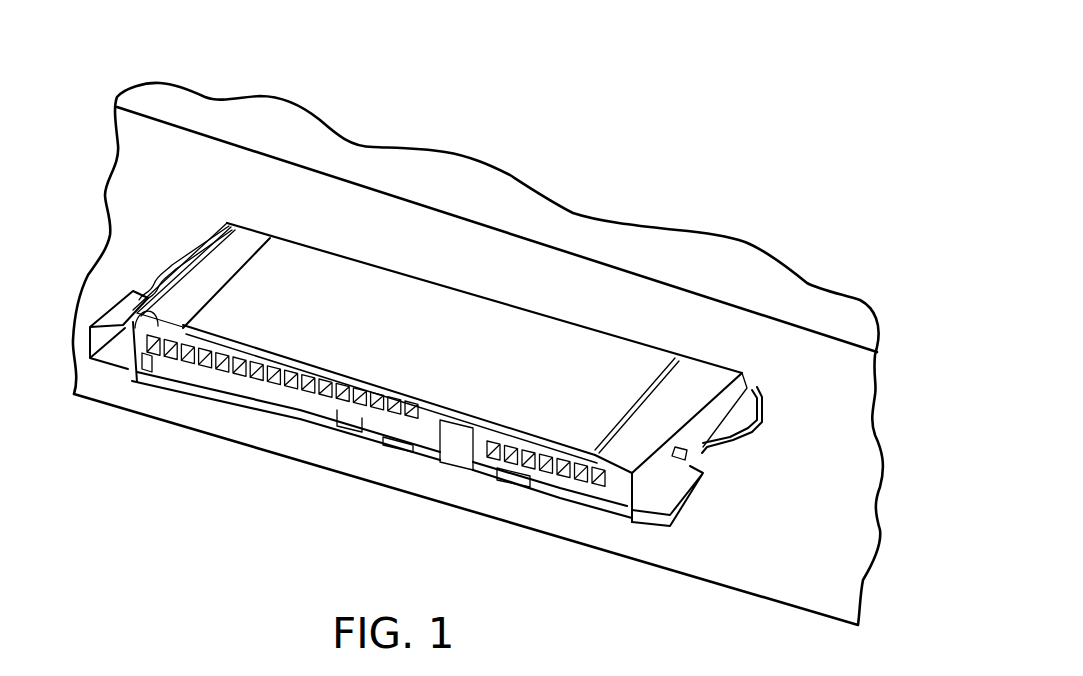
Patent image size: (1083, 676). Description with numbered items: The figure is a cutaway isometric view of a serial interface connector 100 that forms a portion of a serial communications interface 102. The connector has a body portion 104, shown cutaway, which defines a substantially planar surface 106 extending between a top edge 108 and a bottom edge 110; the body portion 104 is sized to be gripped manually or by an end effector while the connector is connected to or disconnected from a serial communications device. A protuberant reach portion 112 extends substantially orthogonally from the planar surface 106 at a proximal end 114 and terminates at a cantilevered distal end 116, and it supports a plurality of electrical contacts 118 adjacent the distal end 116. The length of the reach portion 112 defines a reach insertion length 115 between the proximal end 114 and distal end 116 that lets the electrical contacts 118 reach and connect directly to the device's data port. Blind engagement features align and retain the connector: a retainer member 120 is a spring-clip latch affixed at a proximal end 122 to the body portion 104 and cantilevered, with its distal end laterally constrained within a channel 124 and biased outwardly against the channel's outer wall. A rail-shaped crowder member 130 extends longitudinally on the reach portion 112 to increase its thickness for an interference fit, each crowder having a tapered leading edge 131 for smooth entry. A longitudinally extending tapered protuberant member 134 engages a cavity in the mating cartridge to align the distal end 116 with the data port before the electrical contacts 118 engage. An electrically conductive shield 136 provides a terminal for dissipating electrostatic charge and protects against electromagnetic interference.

The serial interface connector 100 is at (587, 583).
The serial communications interface 102 is at (610, 137).
The body portion 104 is at (110, 229).
The planar surface 106 is at (427, 240).
The top edge 108 is at (200, 133).
The bottom edge 110 is at (381, 487).
The reach portion 112 is at (223, 287).
The proximal end 114 is at (363, 262).
The reach insertion length 115 is at (343, 374).
The distal end 116 is at (178, 360).
The electrical contacts 118 is at (360, 400).
The retainer member 120 is at (723, 463).
The proximal end 122 is at (753, 387).
The channel 124 is at (679, 465).
The crowder member 130 is at (710, 380).
The tapered leading edge 131 is at (74, 394).
The protuberant member 134 is at (647, 520).
The shield 136 is at (507, 467).